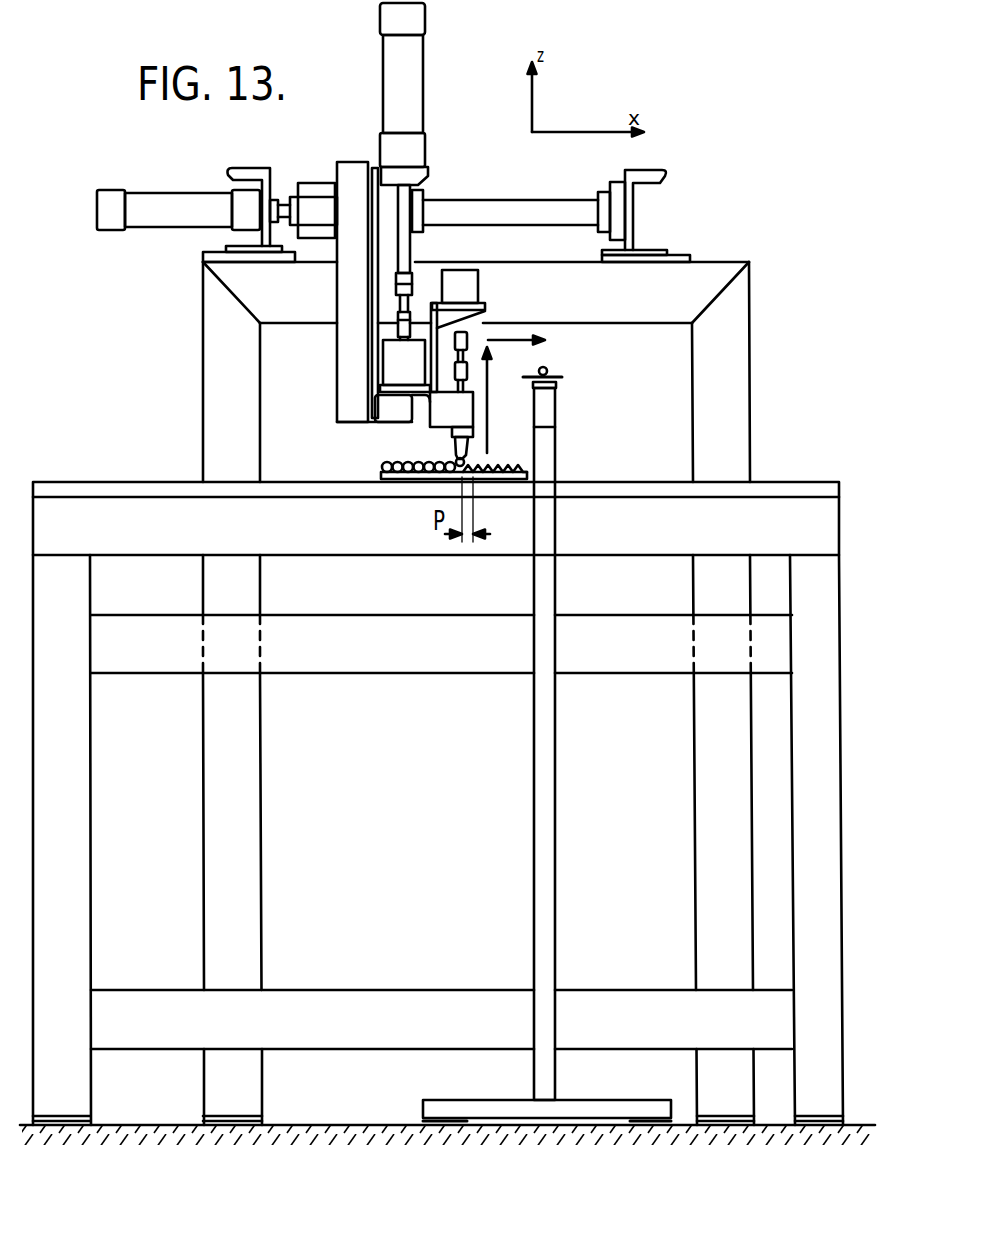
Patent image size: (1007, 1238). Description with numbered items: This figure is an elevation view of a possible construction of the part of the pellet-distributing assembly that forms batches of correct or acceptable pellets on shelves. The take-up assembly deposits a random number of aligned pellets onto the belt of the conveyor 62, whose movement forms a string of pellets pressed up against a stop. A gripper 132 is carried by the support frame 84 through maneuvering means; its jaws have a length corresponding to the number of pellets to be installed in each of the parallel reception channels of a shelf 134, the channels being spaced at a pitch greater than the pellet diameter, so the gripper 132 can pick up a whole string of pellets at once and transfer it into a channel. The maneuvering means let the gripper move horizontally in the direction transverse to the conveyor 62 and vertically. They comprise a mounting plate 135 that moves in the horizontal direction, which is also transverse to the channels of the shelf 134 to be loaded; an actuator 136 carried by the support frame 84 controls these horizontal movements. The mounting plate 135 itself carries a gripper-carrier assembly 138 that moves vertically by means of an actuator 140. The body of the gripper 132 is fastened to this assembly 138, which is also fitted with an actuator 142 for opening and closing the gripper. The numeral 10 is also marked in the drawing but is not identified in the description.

The workpiece ball chain 10 is at (546, 369).
The conveyor 62 is at (546, 412).
The support frame 84 is at (205, 393).
The gripper 132 is at (455, 458).
The shelf 134 is at (392, 480).
The mounting plate 135 is at (353, 381).
The actuator 136 is at (157, 217).
The gripper-carrier assembly 138 is at (482, 336).
The actuator 140 is at (412, 75).
The actuator 142 is at (463, 280).